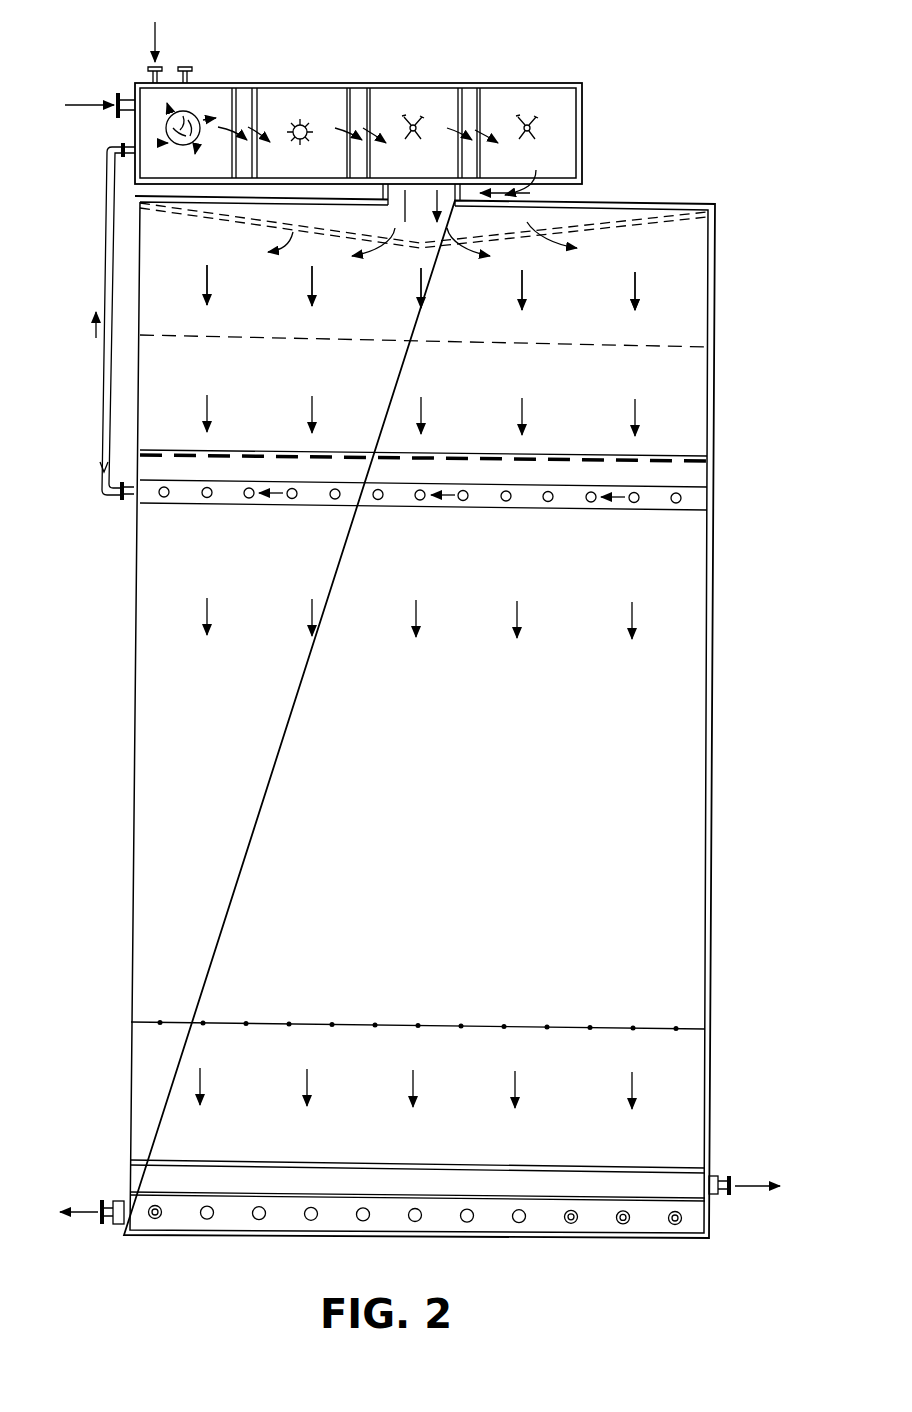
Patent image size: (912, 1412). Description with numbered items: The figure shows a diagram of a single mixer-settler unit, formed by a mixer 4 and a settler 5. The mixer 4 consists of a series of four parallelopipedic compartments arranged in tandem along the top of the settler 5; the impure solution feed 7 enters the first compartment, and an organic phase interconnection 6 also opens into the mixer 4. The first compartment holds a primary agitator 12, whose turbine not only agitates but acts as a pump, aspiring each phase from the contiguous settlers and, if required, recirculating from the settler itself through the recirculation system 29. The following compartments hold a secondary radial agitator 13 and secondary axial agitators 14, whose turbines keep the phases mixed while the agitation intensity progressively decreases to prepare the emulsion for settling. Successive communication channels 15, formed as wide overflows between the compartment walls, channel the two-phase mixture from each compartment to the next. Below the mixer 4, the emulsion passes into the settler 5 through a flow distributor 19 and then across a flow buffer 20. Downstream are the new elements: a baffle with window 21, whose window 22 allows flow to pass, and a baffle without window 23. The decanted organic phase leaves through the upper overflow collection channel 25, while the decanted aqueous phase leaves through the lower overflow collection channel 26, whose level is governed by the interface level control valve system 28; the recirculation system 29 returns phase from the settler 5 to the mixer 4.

The mixer 4 is at (590, 103).
The settler 5 is at (614, 192).
The organic phase interconnection 6 is at (72, 108).
The impure solution feed 7 is at (150, 33).
The primary agitator 12 is at (188, 113).
The secondary radial agitator 13 is at (301, 122).
The secondary axial agitator 14 is at (415, 122).
The communication channels between mixer compartments 15 is at (245, 105).
The flow distributor 19 is at (638, 221).
The flow buffer 20 is at (652, 344).
The baffle with window 21 is at (643, 460).
The window 22 is at (663, 455).
The baffle without window 23 is at (655, 1026).
The upper overflow collection channel for the decanted organic phase 25 is at (667, 1180).
The lower overflow collection channel for the decanted aqueous phase 26 is at (655, 1222).
The interface level control valve system 28 is at (575, 1222).
The recirculation system 29 is at (655, 499).